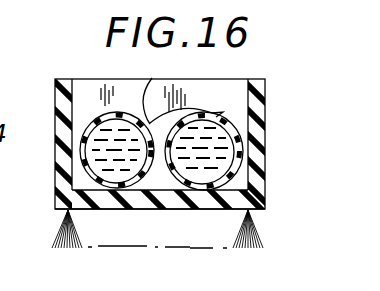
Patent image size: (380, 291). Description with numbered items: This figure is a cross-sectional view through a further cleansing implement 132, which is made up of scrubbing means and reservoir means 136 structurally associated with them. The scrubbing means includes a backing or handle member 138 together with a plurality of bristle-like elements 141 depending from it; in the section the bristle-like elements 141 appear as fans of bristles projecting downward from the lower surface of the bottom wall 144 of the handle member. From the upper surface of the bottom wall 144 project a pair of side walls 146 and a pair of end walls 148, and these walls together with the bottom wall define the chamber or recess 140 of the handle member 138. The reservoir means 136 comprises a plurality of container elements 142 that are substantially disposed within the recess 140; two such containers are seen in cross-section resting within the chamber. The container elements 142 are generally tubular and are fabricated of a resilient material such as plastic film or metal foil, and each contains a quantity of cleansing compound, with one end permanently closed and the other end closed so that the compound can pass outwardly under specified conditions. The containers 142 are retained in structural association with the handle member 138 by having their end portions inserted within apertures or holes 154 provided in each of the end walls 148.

The cleansing implement 132 is at (247, 77).
The reservoir means 136 is at (126, 100).
The backing or handle member 138 is at (263, 177).
The recess or opening 140 is at (261, 116).
The bristle-like elements 141 is at (252, 238).
The container elements 142 is at (208, 135).
The bottom wall 144 is at (258, 214).
The side walls 146 is at (62, 179).
The end walls 148 is at (80, 90).
The apertures or holes 154 is at (183, 87).